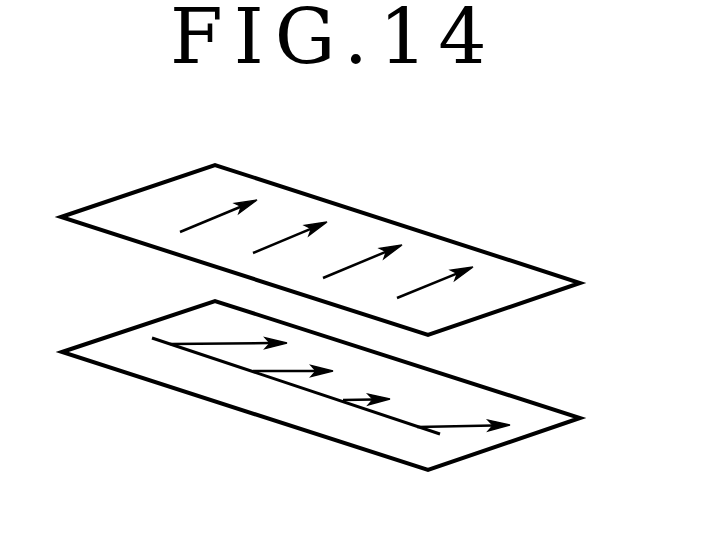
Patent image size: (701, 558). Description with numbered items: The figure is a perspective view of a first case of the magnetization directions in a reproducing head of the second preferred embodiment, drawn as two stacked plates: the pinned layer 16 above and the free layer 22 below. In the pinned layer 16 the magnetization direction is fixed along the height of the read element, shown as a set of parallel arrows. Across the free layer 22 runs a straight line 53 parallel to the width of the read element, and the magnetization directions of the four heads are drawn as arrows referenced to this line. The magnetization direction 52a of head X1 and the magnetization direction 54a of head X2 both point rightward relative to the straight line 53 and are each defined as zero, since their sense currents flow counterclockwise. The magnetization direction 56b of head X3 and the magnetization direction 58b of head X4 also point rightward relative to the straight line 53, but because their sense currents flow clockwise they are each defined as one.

The pinned layer 16 is at (346, 197).
The free layer 22 is at (106, 348).
The magnetization direction 52a is at (230, 343).
The straight line 53 is at (197, 357).
The magnetization direction 54a is at (287, 372).
The magnetization direction 56b is at (353, 403).
The magnetization direction 58b is at (463, 430).